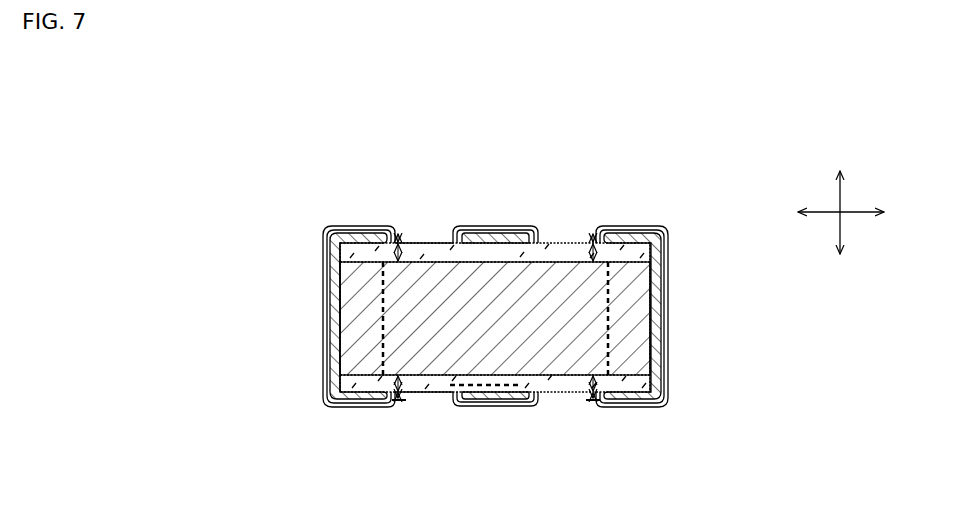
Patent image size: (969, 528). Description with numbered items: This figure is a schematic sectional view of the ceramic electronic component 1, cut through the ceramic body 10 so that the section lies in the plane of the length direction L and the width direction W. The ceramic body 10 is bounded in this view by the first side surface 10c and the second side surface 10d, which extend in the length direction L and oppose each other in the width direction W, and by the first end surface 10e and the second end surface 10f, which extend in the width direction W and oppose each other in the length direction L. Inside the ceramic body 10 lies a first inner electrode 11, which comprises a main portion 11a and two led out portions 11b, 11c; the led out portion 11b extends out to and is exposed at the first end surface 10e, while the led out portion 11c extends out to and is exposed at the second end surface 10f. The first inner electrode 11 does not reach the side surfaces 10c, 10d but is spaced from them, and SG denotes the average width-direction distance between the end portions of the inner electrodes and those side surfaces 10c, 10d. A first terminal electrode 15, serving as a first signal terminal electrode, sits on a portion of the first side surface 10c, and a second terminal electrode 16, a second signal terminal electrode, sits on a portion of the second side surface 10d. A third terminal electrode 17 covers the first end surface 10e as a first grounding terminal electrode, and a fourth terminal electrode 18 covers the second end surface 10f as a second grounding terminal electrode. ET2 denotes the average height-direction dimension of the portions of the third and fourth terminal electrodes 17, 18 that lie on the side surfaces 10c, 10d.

The multilayer ceramic capacitor 1 is at (499, 276).
The ceramic body 10 is at (498, 314).
The first side surface 10c is at (420, 395).
The second side surface 10d is at (410, 243).
The first end surface 10e is at (332, 367).
The second end surface 10f is at (657, 370).
The first inner electrode 11 is at (558, 378).
The main portion 11a is at (492, 261).
The led out portion 11b is at (356, 287).
The led out portion 11c is at (627, 326).
The first terminal electrode 15 is at (481, 223).
The second terminal electrode 16 is at (503, 408).
The third terminal electrode 17 is at (321, 305).
The fourth terminal electrode 18 is at (680, 274).
The average dimension of terminal electrode portions on side surfaces ET2 is at (391, 244).
The side gap SG is at (389, 236).
The width direction W is at (841, 191).
The length direction L is at (862, 213).